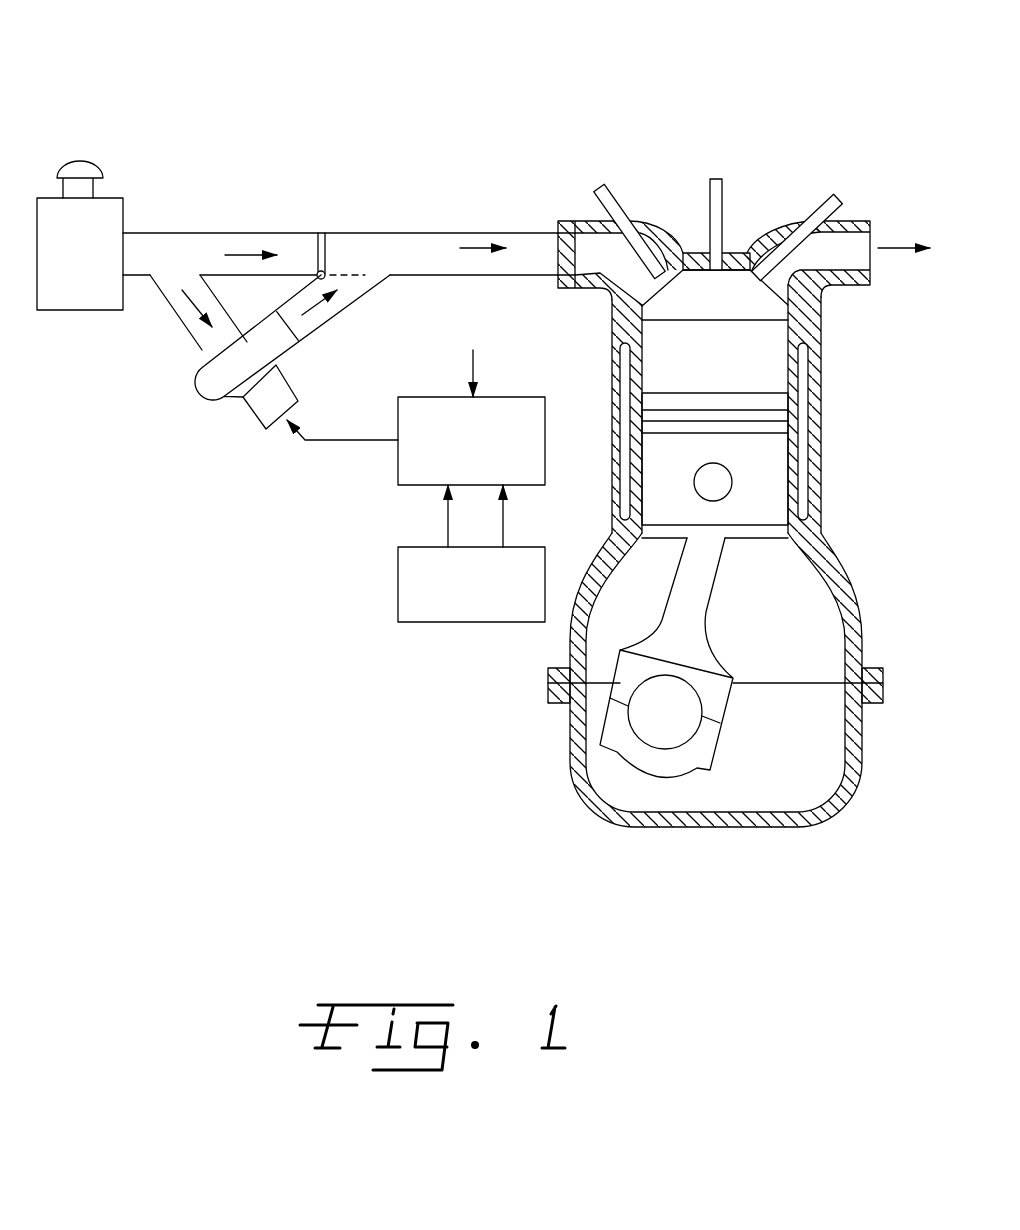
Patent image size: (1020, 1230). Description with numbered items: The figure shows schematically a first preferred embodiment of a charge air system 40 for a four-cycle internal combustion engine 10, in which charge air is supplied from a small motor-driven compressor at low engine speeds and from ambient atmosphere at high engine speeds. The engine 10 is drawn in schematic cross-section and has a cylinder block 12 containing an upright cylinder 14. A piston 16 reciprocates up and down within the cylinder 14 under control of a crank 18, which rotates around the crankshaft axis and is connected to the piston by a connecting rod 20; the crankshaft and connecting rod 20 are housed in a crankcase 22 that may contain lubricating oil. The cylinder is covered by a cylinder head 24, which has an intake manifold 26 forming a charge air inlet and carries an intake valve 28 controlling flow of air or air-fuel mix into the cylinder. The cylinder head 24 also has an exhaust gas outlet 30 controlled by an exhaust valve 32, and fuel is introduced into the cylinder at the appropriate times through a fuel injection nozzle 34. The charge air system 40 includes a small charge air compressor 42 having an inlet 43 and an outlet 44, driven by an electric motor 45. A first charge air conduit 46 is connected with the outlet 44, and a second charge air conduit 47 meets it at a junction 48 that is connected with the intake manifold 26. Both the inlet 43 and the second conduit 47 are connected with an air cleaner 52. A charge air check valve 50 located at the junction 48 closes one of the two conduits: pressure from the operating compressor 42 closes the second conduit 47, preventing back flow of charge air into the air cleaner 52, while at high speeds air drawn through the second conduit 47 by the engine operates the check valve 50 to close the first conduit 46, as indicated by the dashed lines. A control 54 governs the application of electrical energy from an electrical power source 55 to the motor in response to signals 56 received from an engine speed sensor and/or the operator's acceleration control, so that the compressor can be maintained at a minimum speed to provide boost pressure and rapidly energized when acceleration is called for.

The internal combustion engine 10 is at (514, 755).
The cylinder block 12 is at (820, 403).
The cylinder 14 is at (771, 348).
The piston 16 is at (763, 490).
The crank 18 is at (680, 730).
The connecting rod 20 is at (698, 603).
The crankcase 22 is at (858, 593).
The cylinder head 24 is at (610, 299).
The intake manifold 26 is at (585, 243).
The intake valve 28 is at (608, 184).
The exhaust gas outlet 30 is at (864, 236).
The exhaust valve 32 is at (828, 204).
The fuel injection nozzle 34 is at (709, 192).
The charge air system 40 is at (338, 104).
The charge air compressor 42 is at (209, 387).
The inlet 43 is at (224, 350).
The outlet 44 is at (293, 348).
The electric motor 45 is at (258, 412).
The first charge air conduit 46 is at (345, 308).
The second charge air conduit 47 is at (277, 232).
The junction 48 is at (392, 264).
The charge air check valve 50 is at (320, 232).
The air cleaner 52 is at (83, 162).
The control 54 is at (398, 463).
The electrical power source 55 is at (398, 580).
The signals 56 is at (476, 370).